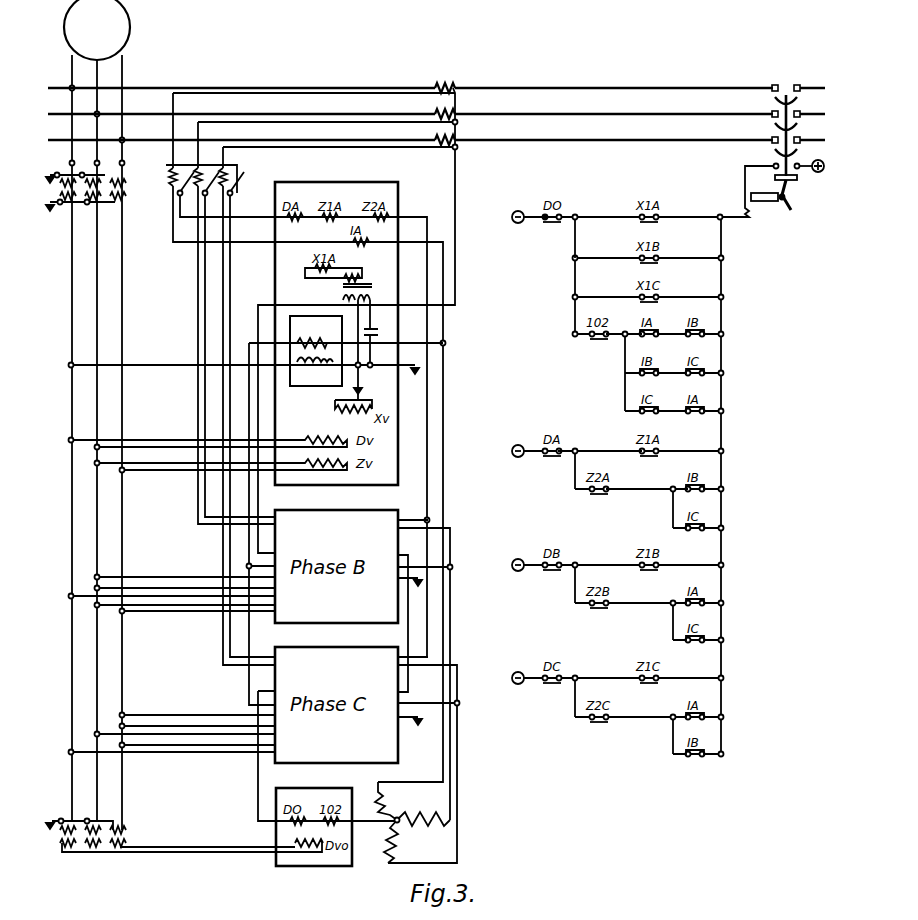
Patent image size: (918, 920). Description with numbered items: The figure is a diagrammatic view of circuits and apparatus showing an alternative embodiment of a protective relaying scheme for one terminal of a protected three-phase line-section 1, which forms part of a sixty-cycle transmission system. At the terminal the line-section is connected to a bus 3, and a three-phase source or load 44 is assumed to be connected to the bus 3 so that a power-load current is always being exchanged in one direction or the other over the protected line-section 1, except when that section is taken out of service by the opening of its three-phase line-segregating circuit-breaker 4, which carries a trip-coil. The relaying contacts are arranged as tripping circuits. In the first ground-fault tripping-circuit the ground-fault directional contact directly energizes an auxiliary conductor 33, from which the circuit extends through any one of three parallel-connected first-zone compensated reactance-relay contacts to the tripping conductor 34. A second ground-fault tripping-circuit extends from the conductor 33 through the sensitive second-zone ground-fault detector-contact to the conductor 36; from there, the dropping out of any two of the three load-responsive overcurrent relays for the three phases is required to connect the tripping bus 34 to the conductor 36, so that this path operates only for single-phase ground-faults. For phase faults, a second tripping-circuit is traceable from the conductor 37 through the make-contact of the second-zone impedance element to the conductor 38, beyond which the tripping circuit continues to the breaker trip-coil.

The three-phase source or load 44 is at (109, 38).
The bus 3 is at (78, 77).
The protected three-phase line-section 1 is at (553, 140).
The three-phase line-segregating circuit-breaker 4 is at (772, 153).
The auxiliary conductor 33 is at (577, 216).
The tripping conductor 34 is at (730, 206).
The conductor of second ground-fault tripping-circuit 36 is at (622, 337).
The conductor 37 is at (577, 450).
The conductor 38 is at (673, 488).